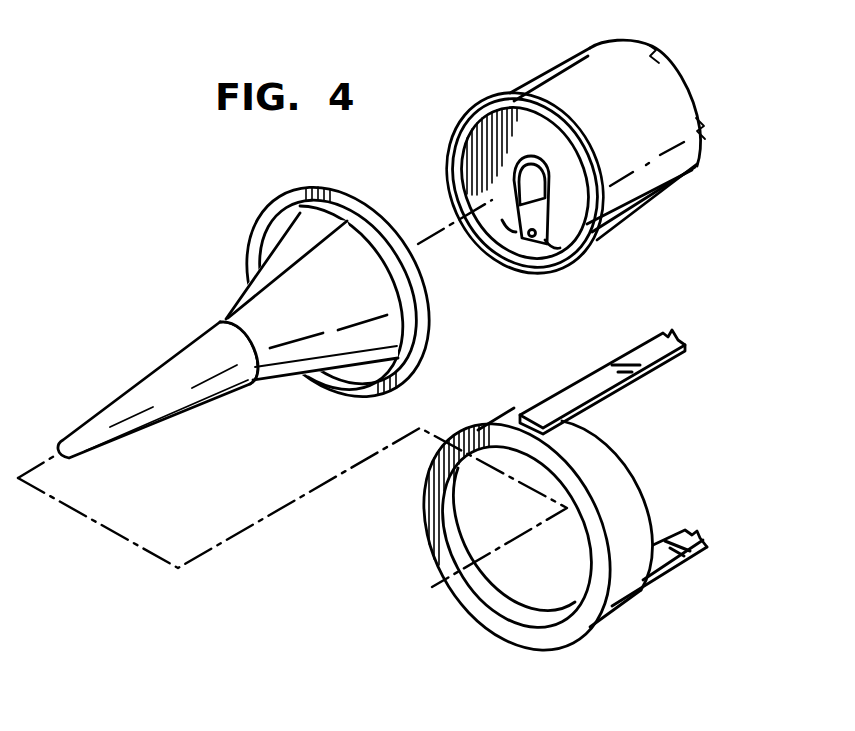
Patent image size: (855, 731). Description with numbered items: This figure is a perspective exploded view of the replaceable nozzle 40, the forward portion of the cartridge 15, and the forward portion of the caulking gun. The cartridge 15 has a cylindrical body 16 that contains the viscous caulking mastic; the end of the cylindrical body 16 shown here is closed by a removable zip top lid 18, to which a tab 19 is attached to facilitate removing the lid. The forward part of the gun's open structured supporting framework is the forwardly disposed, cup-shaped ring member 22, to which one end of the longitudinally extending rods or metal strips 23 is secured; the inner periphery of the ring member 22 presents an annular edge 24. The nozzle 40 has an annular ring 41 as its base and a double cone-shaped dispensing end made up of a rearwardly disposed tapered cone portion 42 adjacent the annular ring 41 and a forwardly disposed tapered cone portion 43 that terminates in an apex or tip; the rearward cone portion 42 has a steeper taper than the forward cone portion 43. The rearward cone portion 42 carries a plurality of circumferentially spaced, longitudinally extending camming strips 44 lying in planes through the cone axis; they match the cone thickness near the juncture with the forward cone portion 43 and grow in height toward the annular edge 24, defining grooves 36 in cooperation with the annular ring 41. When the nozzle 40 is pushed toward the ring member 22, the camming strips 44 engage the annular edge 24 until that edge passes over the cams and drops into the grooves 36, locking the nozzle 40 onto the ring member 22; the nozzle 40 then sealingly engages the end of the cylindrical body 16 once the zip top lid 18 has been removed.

The cartridge 15 is at (670, 80).
The cylindrical body 16 is at (579, 58).
The zip top lid 18 is at (480, 138).
The tab 19 is at (553, 198).
The ring member 22 is at (574, 506).
The metal strips 23 is at (662, 352).
The annular edge 24 is at (492, 588).
The grooves 36 is at (338, 218).
The replaceable nozzle 40 is at (193, 322).
The annular ring 41 is at (333, 192).
The rearwardly disposed tapered cone portion 42 is at (295, 352).
The forwardly disposed tapered cone portion 43 is at (166, 400).
The camming strips 44 is at (277, 268).